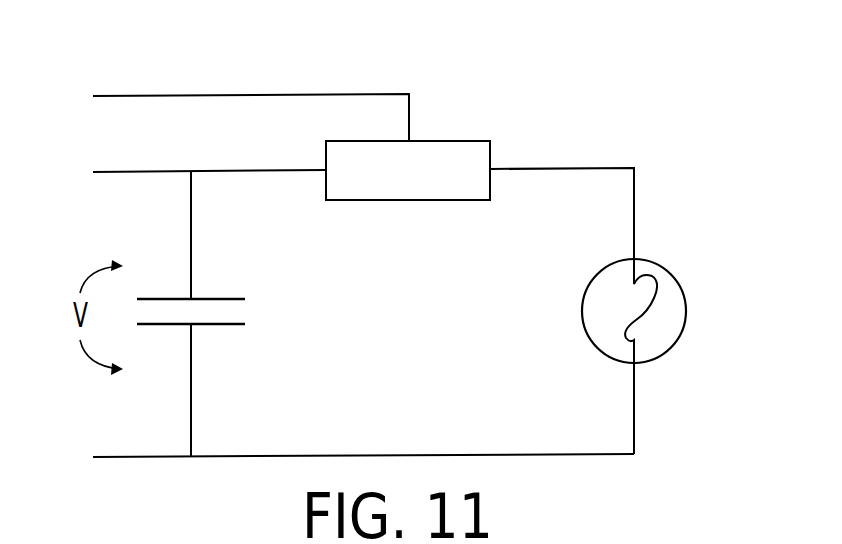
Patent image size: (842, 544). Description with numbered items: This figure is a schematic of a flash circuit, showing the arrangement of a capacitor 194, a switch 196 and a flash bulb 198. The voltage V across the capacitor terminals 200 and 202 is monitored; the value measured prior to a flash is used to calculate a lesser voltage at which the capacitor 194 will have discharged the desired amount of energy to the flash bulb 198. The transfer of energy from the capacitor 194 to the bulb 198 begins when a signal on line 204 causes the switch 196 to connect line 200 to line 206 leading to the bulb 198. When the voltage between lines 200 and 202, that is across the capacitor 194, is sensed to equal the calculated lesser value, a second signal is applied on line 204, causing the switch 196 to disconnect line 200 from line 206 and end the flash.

The capacitor 194 is at (222, 298).
The switch 196 is at (467, 140).
The flash bulb 198 is at (673, 345).
The capacitor terminal 200 is at (122, 172).
The capacitor terminal 202 is at (123, 457).
The line 204 is at (123, 96).
The line 206 is at (610, 168).